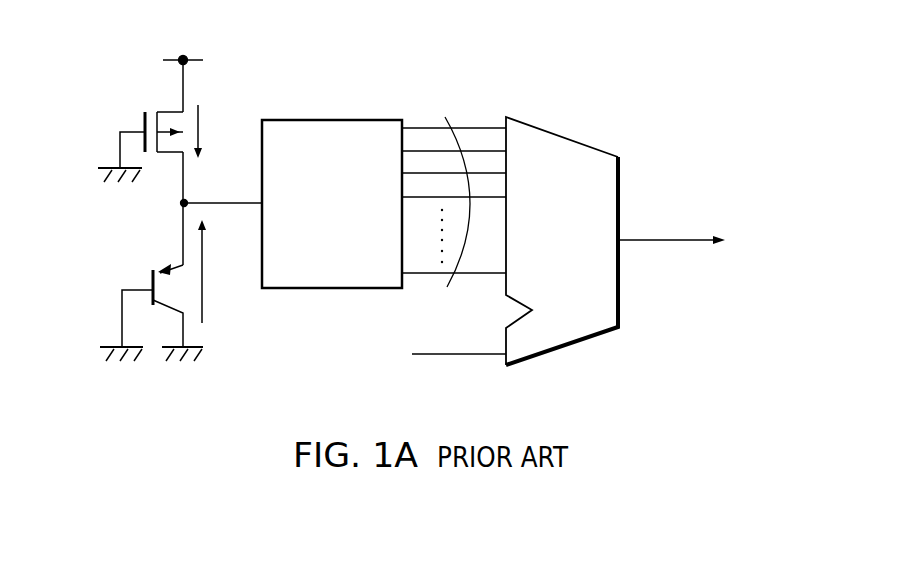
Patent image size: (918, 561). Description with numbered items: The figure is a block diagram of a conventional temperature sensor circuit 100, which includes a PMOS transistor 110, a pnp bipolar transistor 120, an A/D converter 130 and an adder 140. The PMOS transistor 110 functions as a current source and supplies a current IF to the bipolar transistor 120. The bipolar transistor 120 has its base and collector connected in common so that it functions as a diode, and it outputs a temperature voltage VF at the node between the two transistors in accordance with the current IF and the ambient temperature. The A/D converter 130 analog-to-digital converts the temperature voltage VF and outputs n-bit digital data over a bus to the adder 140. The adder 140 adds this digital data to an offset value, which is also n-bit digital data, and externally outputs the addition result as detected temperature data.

The temperature sensor circuit 100 is at (484, 74).
The PMOS transistor 110 is at (135, 125).
The pnp bipolar transistor 120 is at (158, 262).
The A/D converter 130 is at (334, 118).
The adder 140 is at (573, 138).